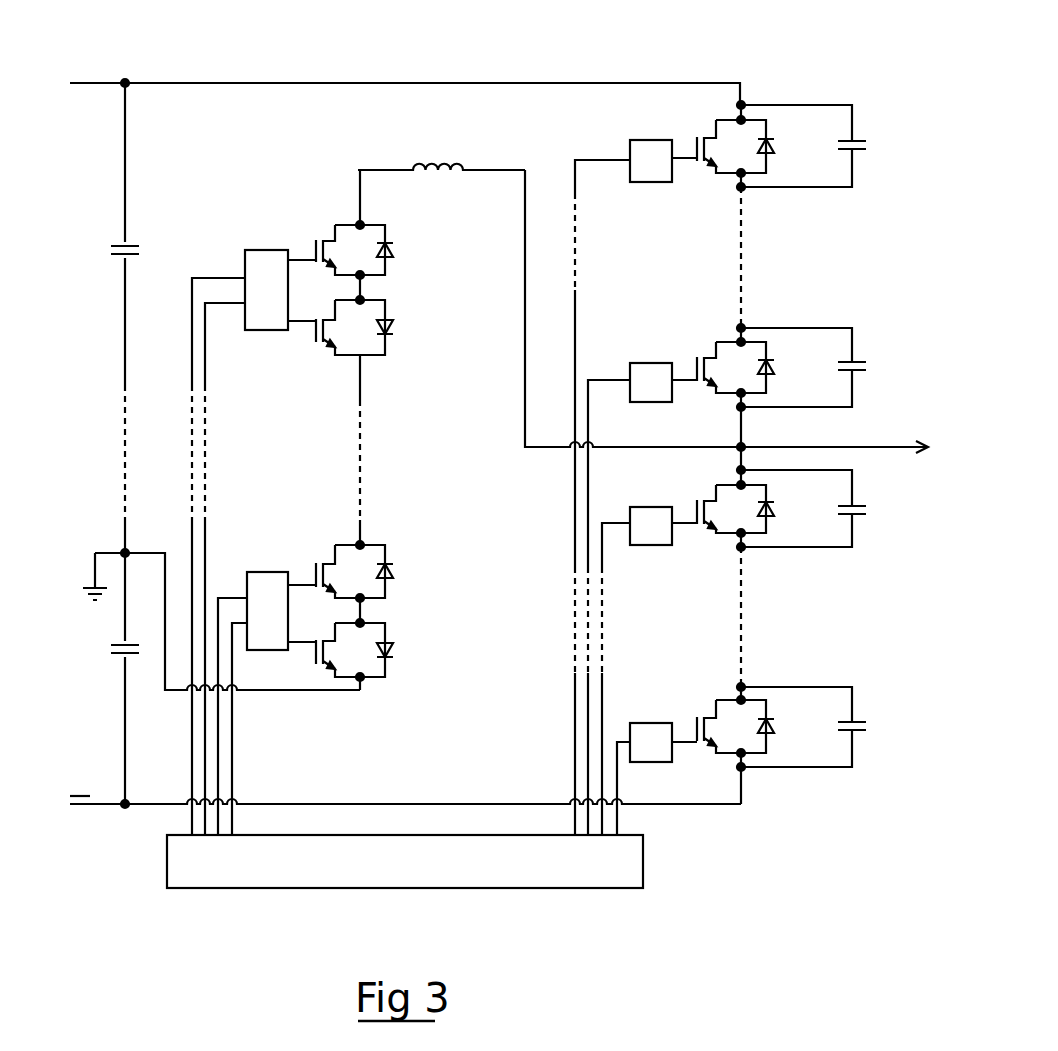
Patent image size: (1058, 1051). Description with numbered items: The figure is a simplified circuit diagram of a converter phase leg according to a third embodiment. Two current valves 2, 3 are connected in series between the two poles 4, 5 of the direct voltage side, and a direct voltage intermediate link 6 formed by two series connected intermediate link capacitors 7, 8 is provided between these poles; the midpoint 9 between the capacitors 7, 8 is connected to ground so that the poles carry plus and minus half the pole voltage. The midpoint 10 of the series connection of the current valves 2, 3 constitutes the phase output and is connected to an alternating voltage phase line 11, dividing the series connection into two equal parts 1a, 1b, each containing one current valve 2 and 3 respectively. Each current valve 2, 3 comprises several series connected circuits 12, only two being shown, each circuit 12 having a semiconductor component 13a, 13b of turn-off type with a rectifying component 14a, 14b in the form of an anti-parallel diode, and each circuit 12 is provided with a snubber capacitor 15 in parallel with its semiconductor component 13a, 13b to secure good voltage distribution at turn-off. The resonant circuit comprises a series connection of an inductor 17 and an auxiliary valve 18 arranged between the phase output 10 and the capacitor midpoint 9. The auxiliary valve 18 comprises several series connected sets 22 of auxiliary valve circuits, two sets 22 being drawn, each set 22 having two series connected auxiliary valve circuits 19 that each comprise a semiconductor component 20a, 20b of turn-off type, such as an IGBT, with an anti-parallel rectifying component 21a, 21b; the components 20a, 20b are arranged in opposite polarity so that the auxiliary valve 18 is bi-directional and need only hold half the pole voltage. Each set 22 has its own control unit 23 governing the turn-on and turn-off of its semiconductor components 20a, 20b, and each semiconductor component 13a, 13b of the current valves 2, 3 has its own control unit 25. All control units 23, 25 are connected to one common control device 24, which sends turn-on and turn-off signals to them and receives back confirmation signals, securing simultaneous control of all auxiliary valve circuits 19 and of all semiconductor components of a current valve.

The first part of the series connection 1a is at (876, 305).
The second part of the series connection 1b is at (884, 657).
The current valve 2 is at (798, 399).
The current valve 3 is at (783, 607).
The pole 4 is at (124, 82).
The pole 5 is at (95, 806).
The direct voltage intermediate link 6 is at (217, 443).
The intermediate link capacitor 7 is at (134, 245).
The intermediate link capacitor 8 is at (125, 660).
The midpoint 9 is at (122, 552).
The midpoint 10 is at (738, 445).
The alternating voltage phase line 11 is at (897, 444).
The series connected circuit 12 is at (783, 412).
The semiconductor component of turn-off type 13a is at (695, 128).
The semiconductor component of turn-off type 13b is at (697, 505).
The rectifying component 14a is at (768, 148).
The rectifying component 14b is at (770, 518).
The snubber capacitor 15 is at (866, 142).
The inductor 17 is at (437, 157).
The auxiliary valve 18 is at (358, 468).
The auxiliary valve circuit 19 is at (393, 527).
The semiconductor component of turn-off type 20a is at (312, 245).
The semiconductor component of turn-off type 20b is at (308, 350).
The rectifying component 21a is at (394, 250).
The rectifying component 21b is at (394, 328).
The set of auxiliary valve circuits 22 is at (337, 401).
The control unit 23 is at (268, 331).
The control device 24 is at (280, 890).
The control unit 25 is at (655, 183).